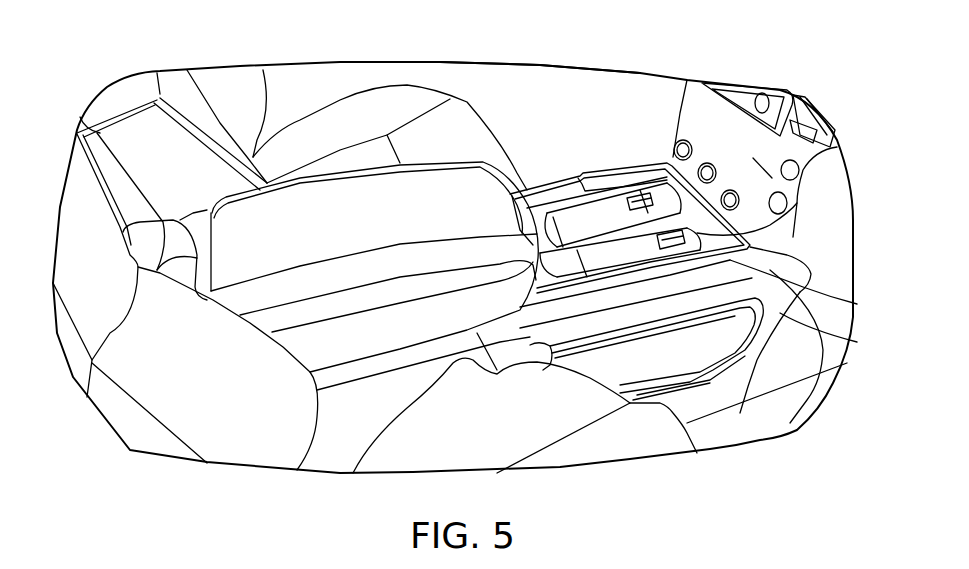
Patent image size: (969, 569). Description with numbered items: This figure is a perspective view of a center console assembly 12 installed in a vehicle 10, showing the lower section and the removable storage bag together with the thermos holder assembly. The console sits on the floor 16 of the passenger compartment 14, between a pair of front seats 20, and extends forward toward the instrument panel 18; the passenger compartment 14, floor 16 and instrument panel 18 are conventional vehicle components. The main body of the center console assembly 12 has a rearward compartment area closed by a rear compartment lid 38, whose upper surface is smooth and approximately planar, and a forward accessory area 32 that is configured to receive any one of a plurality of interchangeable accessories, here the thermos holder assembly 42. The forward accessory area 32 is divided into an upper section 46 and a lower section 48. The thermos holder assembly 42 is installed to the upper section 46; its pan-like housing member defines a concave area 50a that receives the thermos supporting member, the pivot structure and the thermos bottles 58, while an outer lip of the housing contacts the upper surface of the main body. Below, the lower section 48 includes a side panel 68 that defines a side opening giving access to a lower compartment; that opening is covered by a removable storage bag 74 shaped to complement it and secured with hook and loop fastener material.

The vehicle 10 is at (665, 47).
The center console assembly 12 is at (593, 172).
The passenger compartment 14 is at (550, 103).
The floor 16 is at (787, 410).
The instrument panel 18 is at (797, 192).
The front seats 20 is at (477, 133).
The forward accessory area 32 is at (550, 193).
The rear compartment lid 38 is at (337, 210).
The thermos holder assembly 42 is at (600, 283).
The upper section 46 is at (850, 304).
The lower section 48 is at (705, 340).
The concave area 50a is at (660, 208).
The thermos bottles 58 is at (607, 220).
The side panel 68 is at (852, 341).
The removable storage bag 74 is at (677, 362).